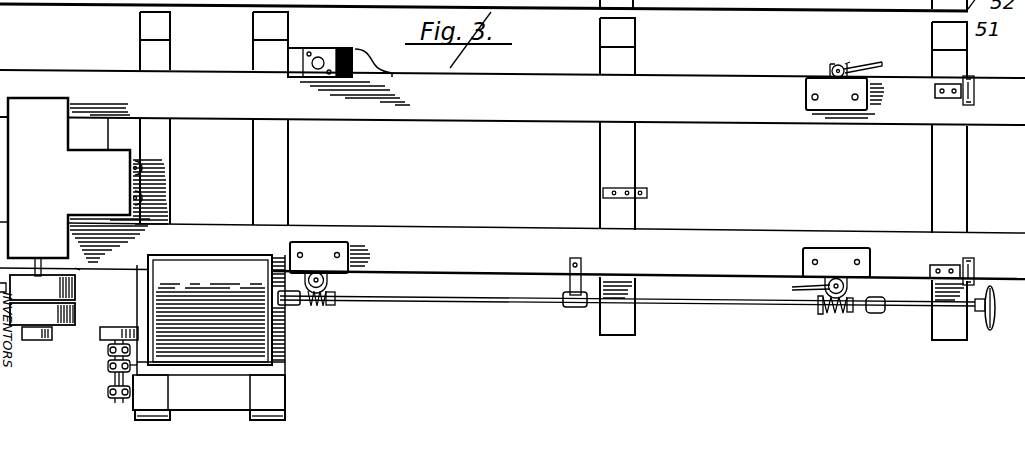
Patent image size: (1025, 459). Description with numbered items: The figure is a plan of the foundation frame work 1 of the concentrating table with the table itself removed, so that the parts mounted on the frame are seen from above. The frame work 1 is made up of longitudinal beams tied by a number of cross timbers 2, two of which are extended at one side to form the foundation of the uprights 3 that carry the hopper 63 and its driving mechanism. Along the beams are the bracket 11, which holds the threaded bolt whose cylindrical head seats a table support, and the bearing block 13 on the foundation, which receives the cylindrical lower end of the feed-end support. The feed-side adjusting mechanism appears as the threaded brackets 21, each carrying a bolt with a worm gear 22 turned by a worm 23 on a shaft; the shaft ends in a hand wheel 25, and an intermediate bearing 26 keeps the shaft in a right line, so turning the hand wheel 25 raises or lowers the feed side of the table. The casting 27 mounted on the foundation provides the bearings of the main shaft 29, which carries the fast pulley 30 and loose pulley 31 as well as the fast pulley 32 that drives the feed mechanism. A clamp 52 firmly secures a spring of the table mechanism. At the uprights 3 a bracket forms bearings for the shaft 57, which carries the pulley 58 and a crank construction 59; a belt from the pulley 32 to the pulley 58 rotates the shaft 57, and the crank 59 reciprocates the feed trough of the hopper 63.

The foundation frame work 1 is at (512, 97).
The cross timbers 2 is at (140, 47).
The uprights 3 is at (209, 392).
The bracket 11 is at (824, 90).
The bearing block 13 is at (323, 54).
The threaded bracket 21 is at (328, 252).
The worm gear 22 is at (862, 313).
The worm 23 is at (332, 306).
The hand wheel 25 is at (988, 331).
The intermediate bearing 26 is at (572, 281).
The casting 27 is at (76, 268).
The main shaft 29 is at (34, 270).
The fast pulley 30 is at (37, 287).
The loose pulley 31 is at (77, 316).
The fast pulley 32 is at (32, 341).
The clamp 52 is at (975, 81).
The shaft 57 is at (110, 381).
The pulley 58 is at (101, 335).
The crank construction 59 is at (108, 366).
The hopper 63 is at (216, 310).